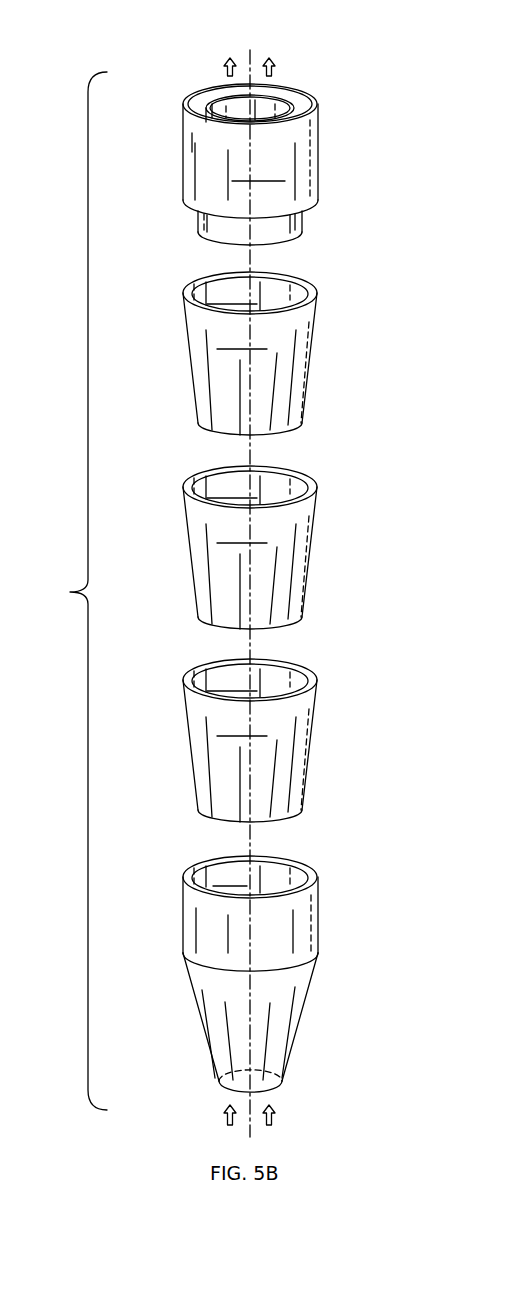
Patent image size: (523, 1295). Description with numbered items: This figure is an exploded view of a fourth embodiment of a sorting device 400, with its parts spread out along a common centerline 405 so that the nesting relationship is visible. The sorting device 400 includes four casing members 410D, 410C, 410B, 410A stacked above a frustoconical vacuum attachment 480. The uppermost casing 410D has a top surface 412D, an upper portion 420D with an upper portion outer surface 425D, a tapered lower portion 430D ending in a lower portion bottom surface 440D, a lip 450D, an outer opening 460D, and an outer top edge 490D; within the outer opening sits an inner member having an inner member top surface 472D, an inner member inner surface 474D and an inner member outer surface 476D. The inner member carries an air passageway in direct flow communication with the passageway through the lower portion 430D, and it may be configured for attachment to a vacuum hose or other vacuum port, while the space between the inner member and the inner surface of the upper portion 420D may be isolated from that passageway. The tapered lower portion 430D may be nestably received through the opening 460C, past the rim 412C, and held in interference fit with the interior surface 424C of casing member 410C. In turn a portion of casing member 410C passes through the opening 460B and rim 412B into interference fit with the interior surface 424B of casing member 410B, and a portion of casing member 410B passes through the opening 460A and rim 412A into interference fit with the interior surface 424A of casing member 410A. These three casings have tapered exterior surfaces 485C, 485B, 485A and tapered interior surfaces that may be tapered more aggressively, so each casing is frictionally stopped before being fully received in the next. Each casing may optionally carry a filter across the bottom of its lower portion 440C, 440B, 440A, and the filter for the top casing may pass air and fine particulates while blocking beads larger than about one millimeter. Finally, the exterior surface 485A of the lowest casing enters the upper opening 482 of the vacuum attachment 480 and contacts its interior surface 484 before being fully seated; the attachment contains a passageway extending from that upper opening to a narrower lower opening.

The sorting device 400 is at (67, 591).
The central axis 405 is at (262, 258).
The casing member 410D is at (259, 141).
The top surface 412D is at (290, 88).
The upper portion 420D is at (190, 137).
The upper portion outer surface 425D is at (259, 170).
The tapered lower portion 430D is at (198, 220).
The lower portion bottom surface 440D is at (292, 240).
The lip 450D is at (316, 200).
The outer opening 460D is at (210, 96).
The inner member top surface 472D is at (226, 95).
The inner member inner surface 474D is at (252, 98).
The inner member outer surface 476D is at (204, 99).
The outer top edge 490D is at (313, 90).
The casing member 410C is at (306, 352).
The upper rim of third segment 412C is at (318, 298).
The interior surface 424C is at (242, 295).
The lower portion 440C is at (293, 434).
The opening 460C is at (313, 291).
The tapered exterior surface 485C is at (257, 378).
The casing member 410B is at (306, 546).
The upper rim of second segment 412B is at (362, 506).
The interior surface 424B is at (242, 489).
The lower portion 440B is at (327, 609).
The opening 460B is at (304, 484).
The tapered exterior surface 485B is at (257, 572).
The casing member 410A is at (306, 739).
The upper rim of first segment 412A is at (362, 699).
The interior surface 424A is at (242, 682).
The lower portion 440A is at (327, 802).
The opening 460A is at (304, 677).
The exterior surface 485A is at (257, 765).
The frustoconical vacuum attachment 480 is at (241, 981).
The upper opening 482 is at (313, 873).
The interior surface 484 is at (231, 874).